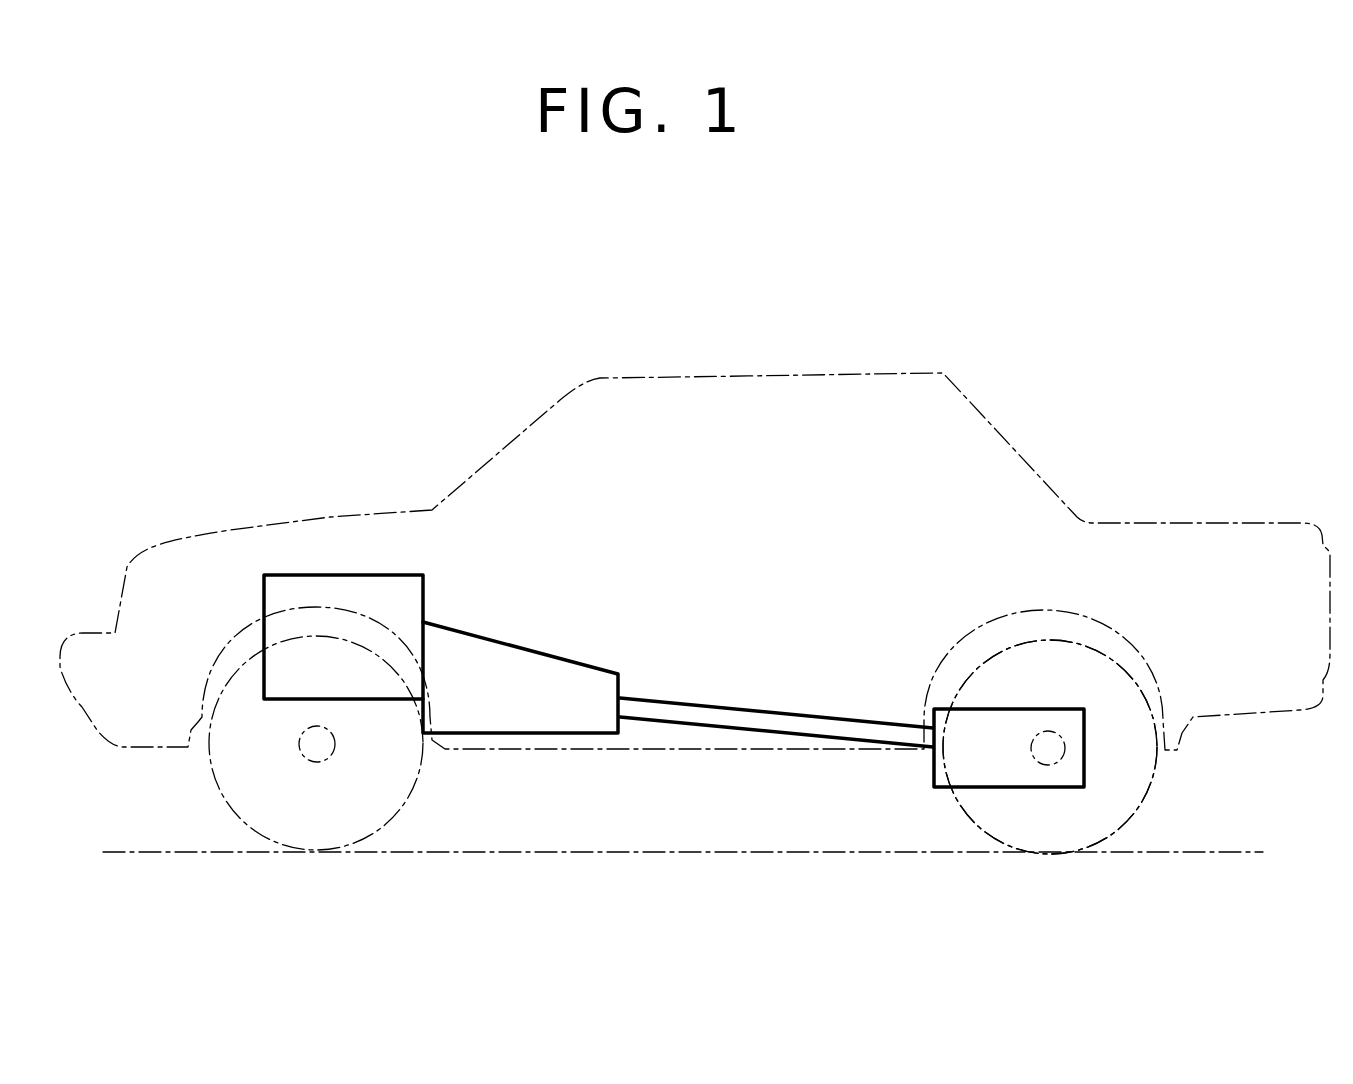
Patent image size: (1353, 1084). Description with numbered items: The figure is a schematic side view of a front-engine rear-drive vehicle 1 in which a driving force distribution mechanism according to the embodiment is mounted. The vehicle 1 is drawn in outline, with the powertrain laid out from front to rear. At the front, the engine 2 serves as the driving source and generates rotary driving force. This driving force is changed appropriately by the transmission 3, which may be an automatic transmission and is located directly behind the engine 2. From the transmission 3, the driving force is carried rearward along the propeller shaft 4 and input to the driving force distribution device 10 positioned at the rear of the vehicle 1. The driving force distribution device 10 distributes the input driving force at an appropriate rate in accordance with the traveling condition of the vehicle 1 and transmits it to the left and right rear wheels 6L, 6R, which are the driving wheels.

The vehicle 1 is at (750, 373).
The engine 2 is at (368, 575).
The transmission 3 is at (507, 640).
The propeller shaft 4 is at (688, 725).
The left rear wheel 6L is at (1135, 826).
The right rear wheel 6R is at (1050, 747).
The driving force distribution device 10 is at (1025, 786).